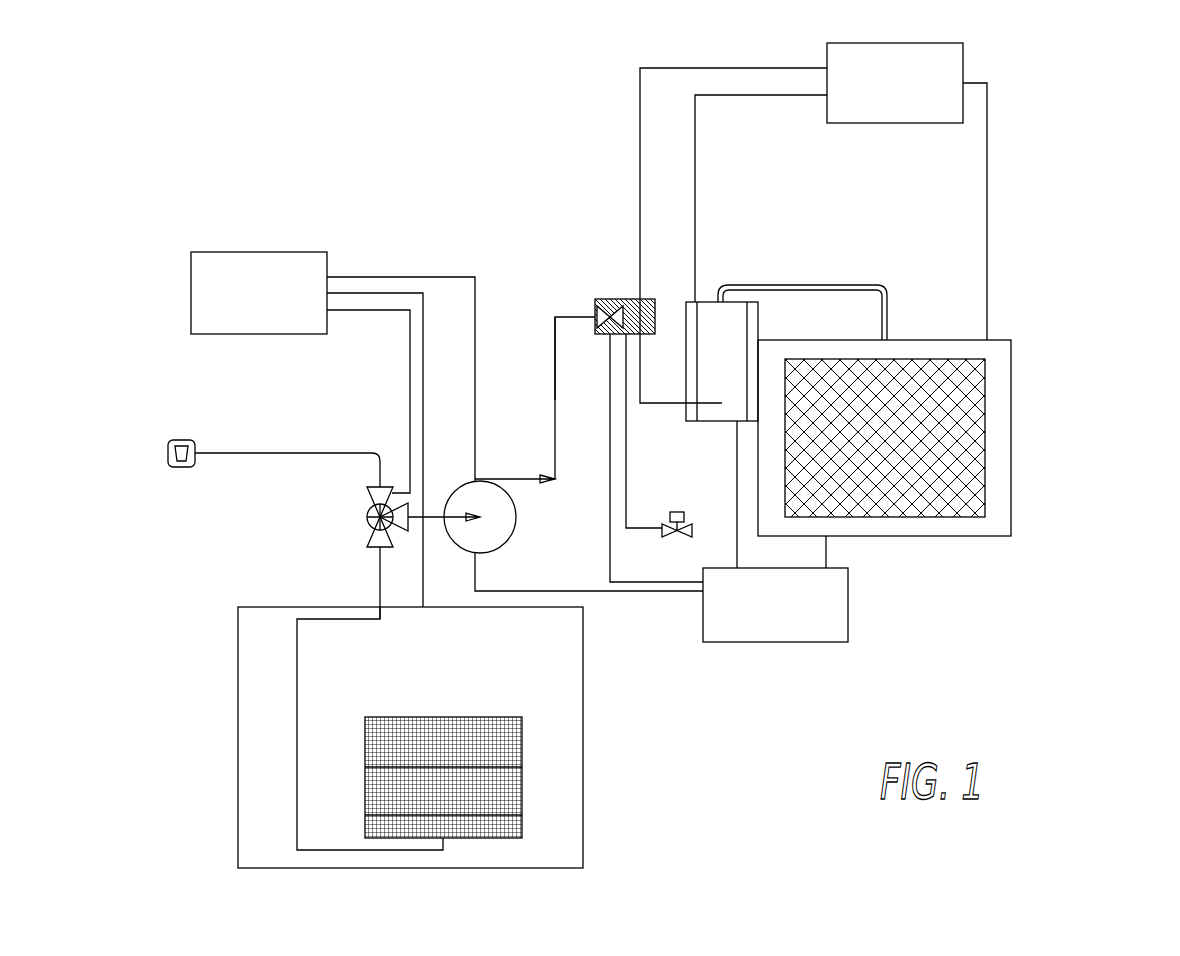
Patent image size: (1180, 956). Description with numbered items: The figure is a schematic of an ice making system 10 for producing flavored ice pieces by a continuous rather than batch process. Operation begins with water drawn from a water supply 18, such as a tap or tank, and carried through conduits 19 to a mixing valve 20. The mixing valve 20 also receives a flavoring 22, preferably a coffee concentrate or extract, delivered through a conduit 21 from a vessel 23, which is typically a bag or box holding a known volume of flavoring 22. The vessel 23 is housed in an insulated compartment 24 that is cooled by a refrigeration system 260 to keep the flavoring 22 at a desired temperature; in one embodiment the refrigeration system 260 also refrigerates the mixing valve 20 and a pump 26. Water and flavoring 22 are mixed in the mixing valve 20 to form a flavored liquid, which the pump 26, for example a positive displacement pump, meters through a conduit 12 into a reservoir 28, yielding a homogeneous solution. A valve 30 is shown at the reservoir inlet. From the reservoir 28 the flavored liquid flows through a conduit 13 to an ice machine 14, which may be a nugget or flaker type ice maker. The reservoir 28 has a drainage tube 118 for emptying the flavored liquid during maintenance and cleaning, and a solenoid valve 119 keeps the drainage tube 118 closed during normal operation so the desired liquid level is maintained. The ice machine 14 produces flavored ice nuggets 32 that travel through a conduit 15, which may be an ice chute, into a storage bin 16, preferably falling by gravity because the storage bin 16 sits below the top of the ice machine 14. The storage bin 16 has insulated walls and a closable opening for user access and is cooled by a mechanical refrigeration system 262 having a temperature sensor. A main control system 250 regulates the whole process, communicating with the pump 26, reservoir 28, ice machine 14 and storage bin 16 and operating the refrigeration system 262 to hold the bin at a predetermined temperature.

The ice making system 10 is at (318, 193).
The conduit 12 is at (555, 400).
The conduit 13 is at (670, 308).
The ice machine 14 is at (708, 302).
The conduit 15 is at (855, 285).
The storage bin 16 is at (1011, 455).
The water supply 18 is at (168, 443).
The conduits 19 is at (300, 453).
The mixing valve 20 is at (367, 517).
The conduit 21 is at (380, 580).
The flavoring 22 is at (500, 752).
The vessel 23 is at (522, 815).
The compartment 24 is at (222, 745).
The pump 26 is at (470, 481).
The reservoir 28 is at (620, 299).
The valve 30 is at (595, 312).
The flavored ice nuggets 32 is at (985, 377).
The drainage tube 118 is at (625, 485).
The solenoid valve 119 is at (677, 512).
The main control system 250 is at (729, 488).
The refrigeration system 260 is at (217, 252).
The refrigeration system 262 is at (963, 56).